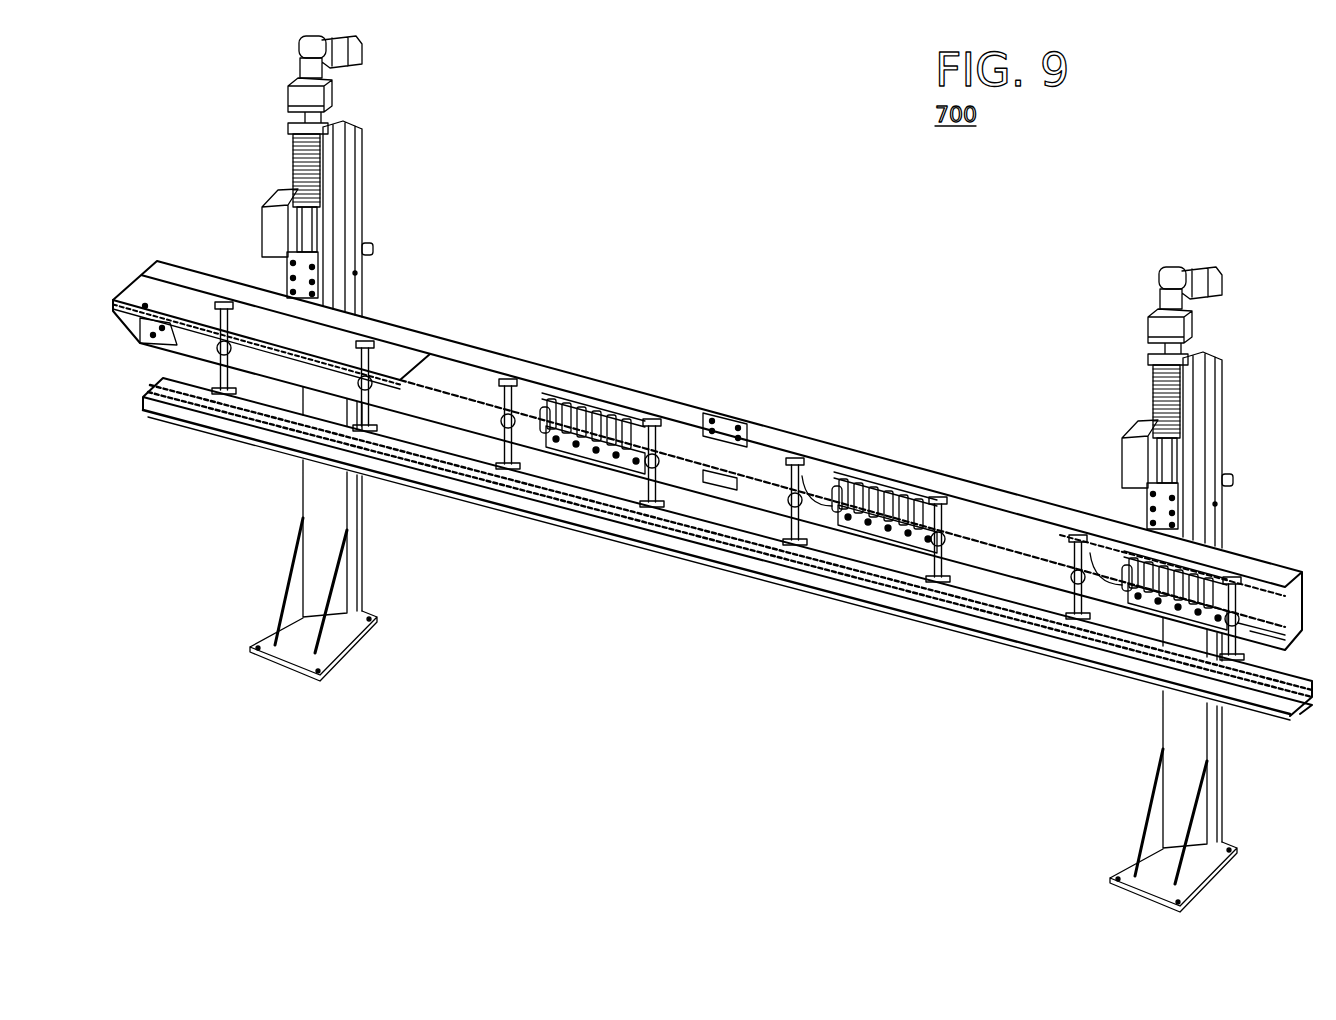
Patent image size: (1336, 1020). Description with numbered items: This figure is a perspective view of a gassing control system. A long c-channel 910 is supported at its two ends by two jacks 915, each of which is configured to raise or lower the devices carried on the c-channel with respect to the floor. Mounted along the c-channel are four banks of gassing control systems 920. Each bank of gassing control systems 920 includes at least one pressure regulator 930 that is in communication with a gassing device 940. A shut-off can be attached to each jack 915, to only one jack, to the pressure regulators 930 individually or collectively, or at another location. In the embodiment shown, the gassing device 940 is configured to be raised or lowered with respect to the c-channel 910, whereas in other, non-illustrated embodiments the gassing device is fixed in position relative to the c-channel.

The c-channel 910 is at (630, 393).
The jack 915 is at (355, 567).
The gassing control system 920 is at (1137, 562).
The pressure regulator 930 is at (893, 487).
The gassing device 940 is at (932, 640).